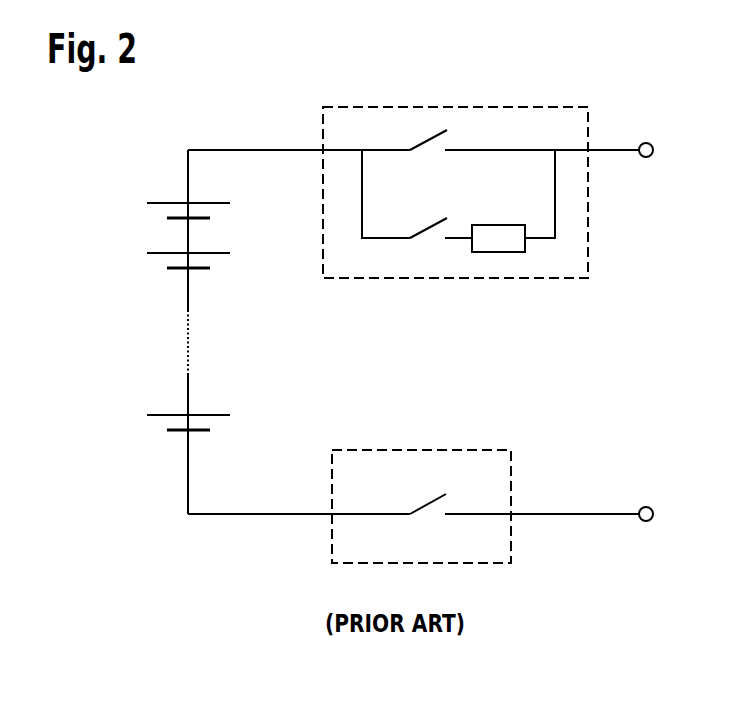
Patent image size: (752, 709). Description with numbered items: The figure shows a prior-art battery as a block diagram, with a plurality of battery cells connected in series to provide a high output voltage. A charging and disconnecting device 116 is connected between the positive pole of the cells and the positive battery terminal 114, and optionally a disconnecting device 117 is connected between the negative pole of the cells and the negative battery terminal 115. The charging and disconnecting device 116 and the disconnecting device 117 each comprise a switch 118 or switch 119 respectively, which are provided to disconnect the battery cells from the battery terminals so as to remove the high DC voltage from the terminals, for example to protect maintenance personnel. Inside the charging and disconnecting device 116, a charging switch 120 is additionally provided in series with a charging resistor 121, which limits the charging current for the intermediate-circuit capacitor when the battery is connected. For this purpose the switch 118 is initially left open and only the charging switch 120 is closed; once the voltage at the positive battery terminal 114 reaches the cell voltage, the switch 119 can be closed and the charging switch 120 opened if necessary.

The positive battery terminal 114 is at (646, 143).
The negative battery terminal 115 is at (646, 507).
The charging and disconnecting device 116 is at (501, 107).
The disconnecting device 117 is at (465, 450).
The switch 118 is at (425, 137).
The switch 119 is at (425, 500).
The charging switch 120 is at (425, 222).
The charging resistor 121 is at (500, 225).